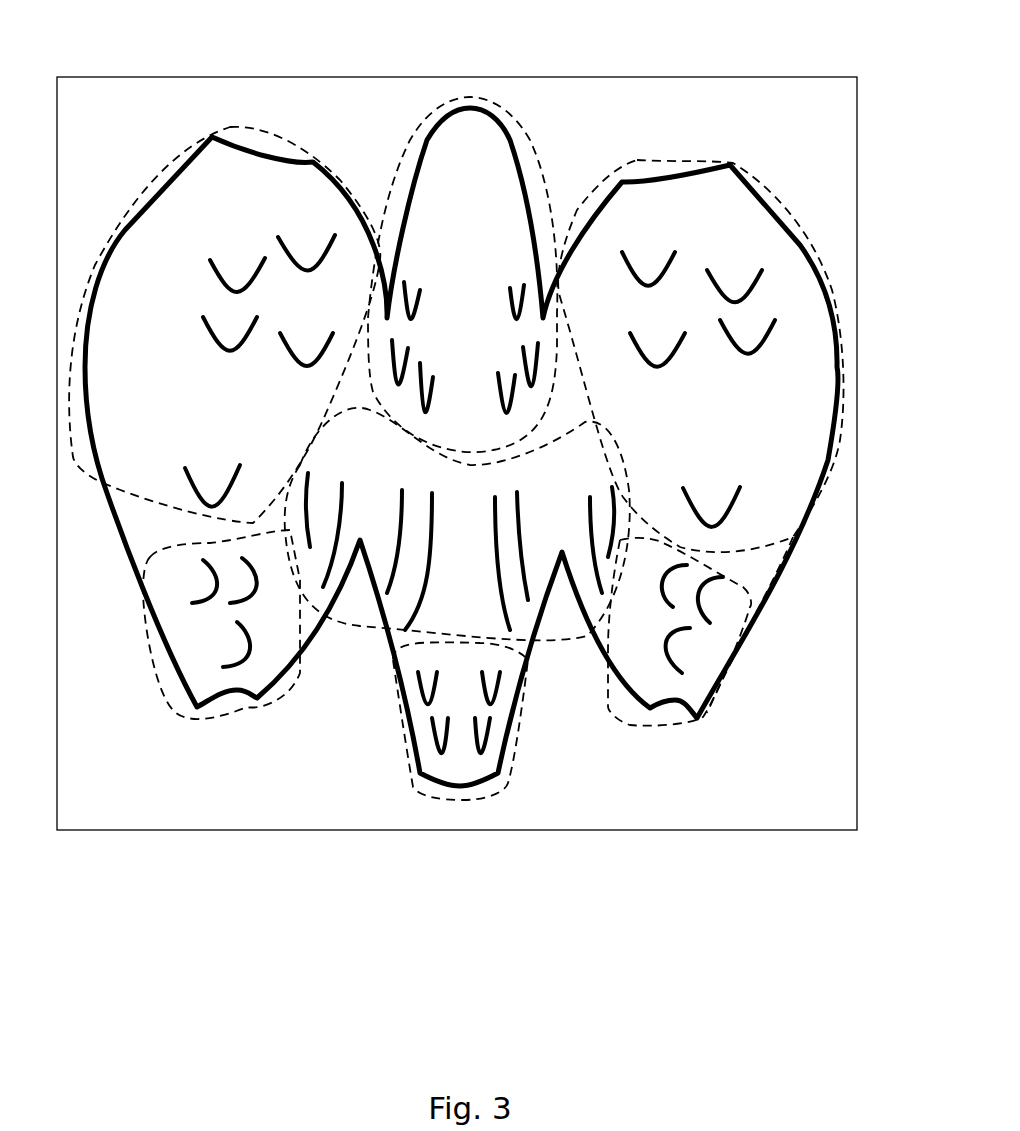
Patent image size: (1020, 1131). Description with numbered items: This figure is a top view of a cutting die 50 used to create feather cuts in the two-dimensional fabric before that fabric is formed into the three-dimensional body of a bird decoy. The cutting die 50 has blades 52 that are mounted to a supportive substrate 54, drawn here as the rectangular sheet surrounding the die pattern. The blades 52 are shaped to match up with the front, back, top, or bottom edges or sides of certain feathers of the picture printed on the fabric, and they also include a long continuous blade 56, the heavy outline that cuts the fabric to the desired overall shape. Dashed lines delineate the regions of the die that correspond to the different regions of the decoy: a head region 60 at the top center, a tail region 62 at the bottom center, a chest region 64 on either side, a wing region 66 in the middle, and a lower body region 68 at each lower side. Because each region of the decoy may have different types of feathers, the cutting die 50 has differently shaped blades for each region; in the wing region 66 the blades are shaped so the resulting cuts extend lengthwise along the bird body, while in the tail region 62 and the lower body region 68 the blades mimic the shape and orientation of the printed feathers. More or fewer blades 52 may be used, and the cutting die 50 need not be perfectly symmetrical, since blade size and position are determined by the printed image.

The cutting die 50 is at (248, 895).
The blades 52 is at (813, 118).
The supportive substrate 54 is at (90, 800).
The long continuous blade 56 is at (476, 787).
The head region 60 is at (455, 100).
The tail region 62 is at (408, 757).
The chest region 64 is at (230, 127).
The wing region 66 is at (548, 648).
The lower body region 68 is at (213, 723).